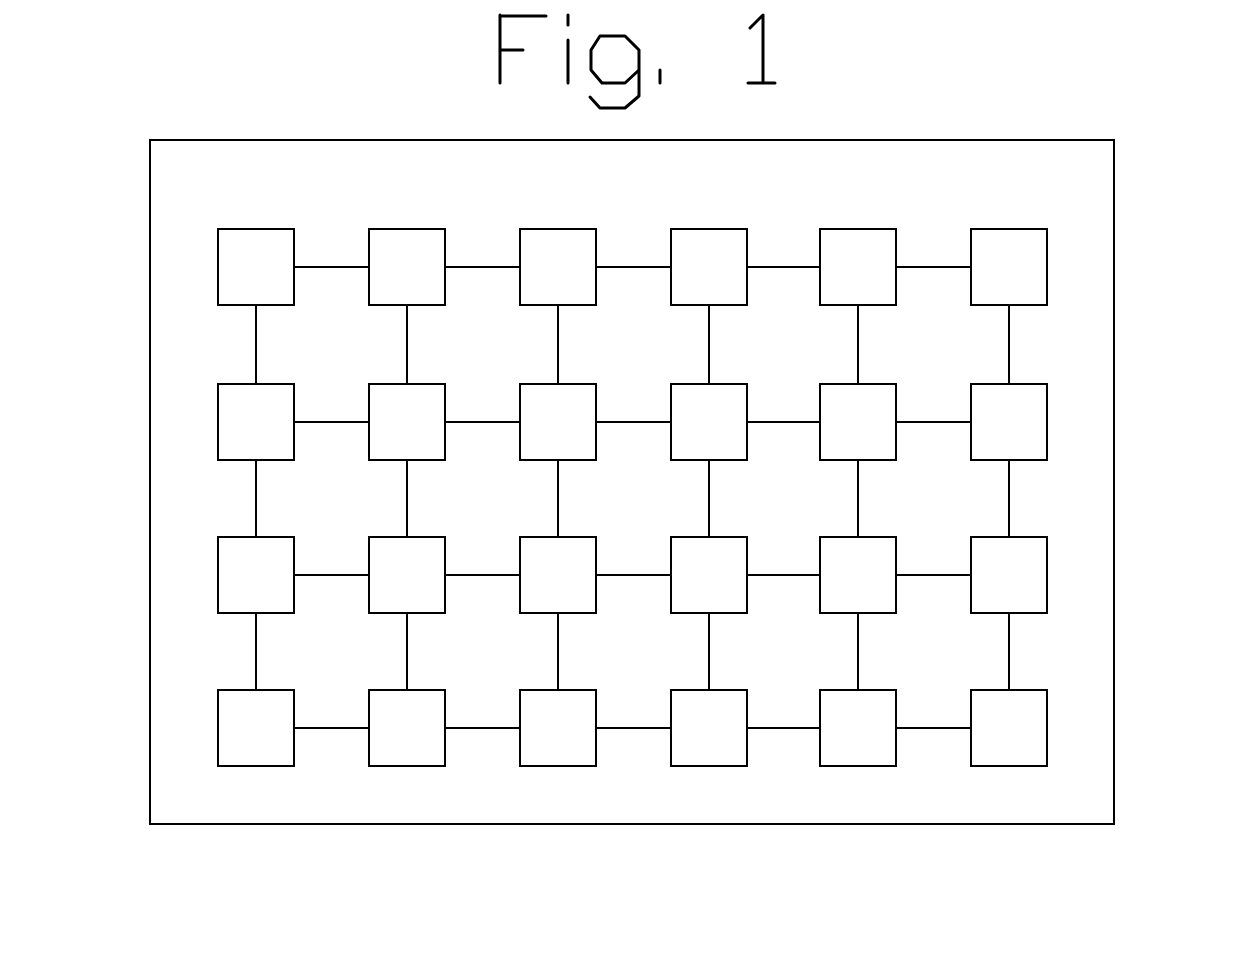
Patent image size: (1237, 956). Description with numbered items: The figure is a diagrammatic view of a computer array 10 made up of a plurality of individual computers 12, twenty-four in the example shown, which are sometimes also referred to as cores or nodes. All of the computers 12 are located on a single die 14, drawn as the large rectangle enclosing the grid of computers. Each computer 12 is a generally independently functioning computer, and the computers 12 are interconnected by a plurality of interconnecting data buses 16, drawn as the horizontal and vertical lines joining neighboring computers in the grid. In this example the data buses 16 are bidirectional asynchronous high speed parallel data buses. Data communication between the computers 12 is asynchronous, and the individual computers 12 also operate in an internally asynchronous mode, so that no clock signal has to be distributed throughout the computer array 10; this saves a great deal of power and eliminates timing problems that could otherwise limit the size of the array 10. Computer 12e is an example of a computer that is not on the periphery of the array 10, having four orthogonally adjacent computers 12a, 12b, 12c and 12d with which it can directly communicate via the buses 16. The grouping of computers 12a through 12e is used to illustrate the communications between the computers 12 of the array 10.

The computer array 10 is at (1141, 344).
The computers 12 is at (1036, 268).
The computer 12a is at (590, 281).
The computer 12b is at (738, 440).
The computer 12c is at (438, 435).
The computer 12d is at (588, 593).
The computer 12e is at (590, 431).
The die 14 is at (407, 202).
The interconnecting data buses 16 is at (785, 422).